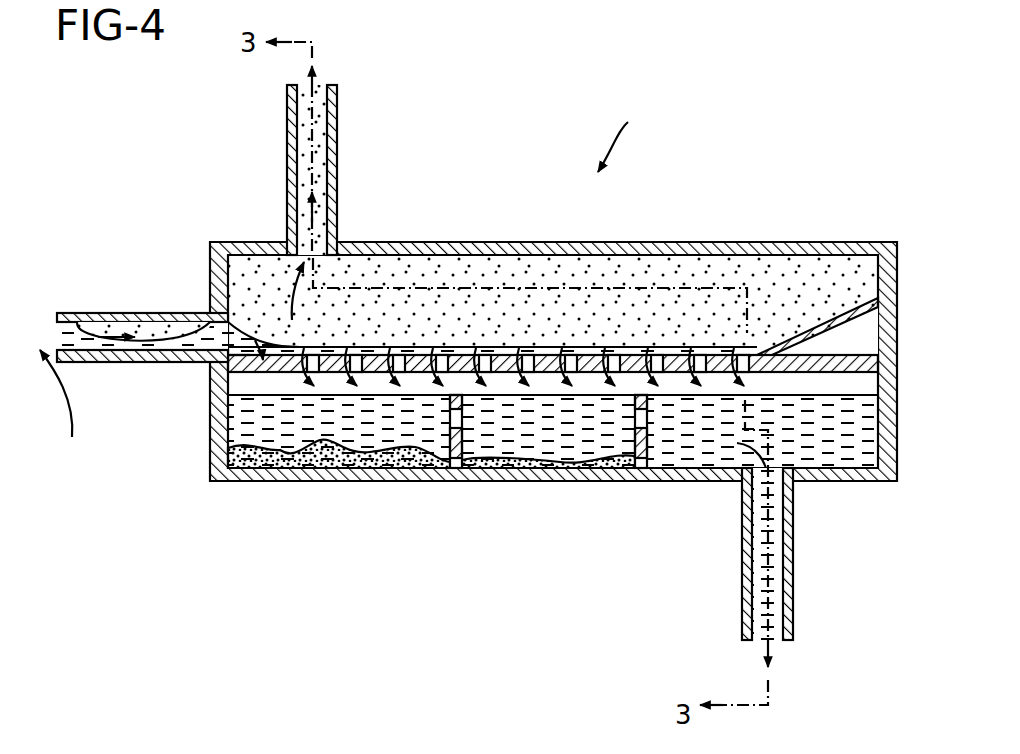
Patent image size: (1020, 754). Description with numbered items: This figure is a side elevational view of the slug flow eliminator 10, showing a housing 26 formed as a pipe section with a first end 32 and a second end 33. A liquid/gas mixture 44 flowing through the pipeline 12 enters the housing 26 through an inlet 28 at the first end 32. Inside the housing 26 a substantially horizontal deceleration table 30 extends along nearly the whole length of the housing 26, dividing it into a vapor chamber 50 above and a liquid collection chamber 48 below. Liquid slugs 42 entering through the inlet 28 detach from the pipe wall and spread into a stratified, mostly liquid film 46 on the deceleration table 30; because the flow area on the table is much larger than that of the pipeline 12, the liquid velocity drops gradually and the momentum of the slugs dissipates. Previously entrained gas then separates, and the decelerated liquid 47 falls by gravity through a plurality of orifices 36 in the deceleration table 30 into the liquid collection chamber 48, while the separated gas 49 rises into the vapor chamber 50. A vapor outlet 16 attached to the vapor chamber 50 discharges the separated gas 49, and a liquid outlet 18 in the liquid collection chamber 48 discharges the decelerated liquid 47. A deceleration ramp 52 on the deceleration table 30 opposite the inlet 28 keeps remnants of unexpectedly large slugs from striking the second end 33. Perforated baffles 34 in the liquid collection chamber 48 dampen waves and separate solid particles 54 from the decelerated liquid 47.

The slug flow eliminator 10 is at (632, 133).
The pipeline 12 is at (140, 313).
The vapor outlet 16 is at (338, 130).
The liquid outlet 18 is at (793, 577).
The housing 26 is at (467, 252).
The inlet 28 is at (210, 363).
The deceleration table 30 is at (243, 367).
The first end 32 is at (210, 420).
The second end 33 is at (897, 277).
The baffles 34 is at (453, 480).
The orifices 36 is at (617, 360).
The liquid slugs 42 is at (70, 313).
The liquid/gas mixture 44 is at (65, 410).
The liquid film 46 is at (400, 350).
The decelerated liquid 47 is at (570, 385).
The liquid collection chamber 48 is at (287, 420).
The separated gas 49 is at (337, 212).
The vapor chamber 50 is at (780, 277).
The deceleration ramp 52 is at (823, 323).
The solid particles 54 is at (323, 457).